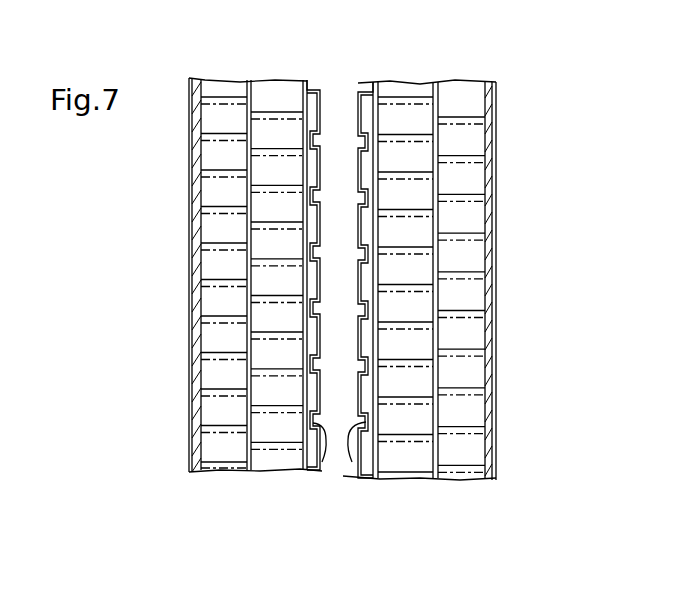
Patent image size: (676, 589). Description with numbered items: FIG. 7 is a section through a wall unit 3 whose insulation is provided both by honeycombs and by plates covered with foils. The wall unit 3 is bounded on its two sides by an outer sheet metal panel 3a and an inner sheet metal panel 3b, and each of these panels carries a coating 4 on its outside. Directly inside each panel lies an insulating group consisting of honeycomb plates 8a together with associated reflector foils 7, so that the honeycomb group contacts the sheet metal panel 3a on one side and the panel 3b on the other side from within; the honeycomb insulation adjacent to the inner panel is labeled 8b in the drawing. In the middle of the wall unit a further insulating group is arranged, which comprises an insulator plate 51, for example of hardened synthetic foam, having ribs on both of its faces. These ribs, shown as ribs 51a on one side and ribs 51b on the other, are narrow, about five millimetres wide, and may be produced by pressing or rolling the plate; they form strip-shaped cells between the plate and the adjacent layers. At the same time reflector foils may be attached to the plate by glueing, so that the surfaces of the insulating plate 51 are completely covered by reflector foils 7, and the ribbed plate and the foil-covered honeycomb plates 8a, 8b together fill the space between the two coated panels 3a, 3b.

The wall unit 3 is at (176, 142).
The outer sheet metal panel 3a is at (193, 186).
The inner sheet metal panel 3b is at (494, 191).
The coating 4 is at (188, 278).
The reflector foil 7 is at (298, 82).
The honeycomb plate 8a is at (213, 466).
The right web structure 8b is at (460, 465).
The insulating plate 51 is at (342, 98).
The ribs 51a is at (322, 462).
The vertical ribs 51b is at (352, 462).